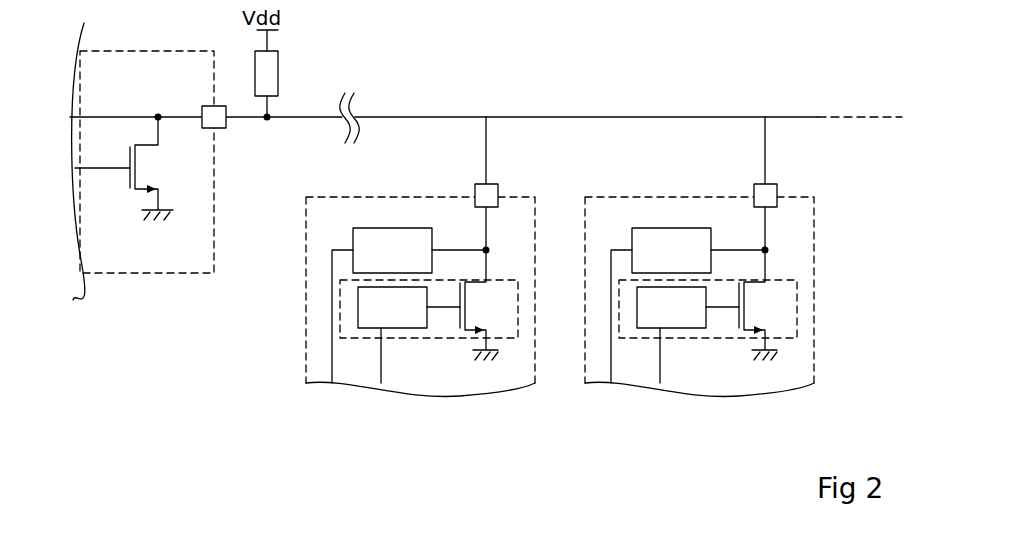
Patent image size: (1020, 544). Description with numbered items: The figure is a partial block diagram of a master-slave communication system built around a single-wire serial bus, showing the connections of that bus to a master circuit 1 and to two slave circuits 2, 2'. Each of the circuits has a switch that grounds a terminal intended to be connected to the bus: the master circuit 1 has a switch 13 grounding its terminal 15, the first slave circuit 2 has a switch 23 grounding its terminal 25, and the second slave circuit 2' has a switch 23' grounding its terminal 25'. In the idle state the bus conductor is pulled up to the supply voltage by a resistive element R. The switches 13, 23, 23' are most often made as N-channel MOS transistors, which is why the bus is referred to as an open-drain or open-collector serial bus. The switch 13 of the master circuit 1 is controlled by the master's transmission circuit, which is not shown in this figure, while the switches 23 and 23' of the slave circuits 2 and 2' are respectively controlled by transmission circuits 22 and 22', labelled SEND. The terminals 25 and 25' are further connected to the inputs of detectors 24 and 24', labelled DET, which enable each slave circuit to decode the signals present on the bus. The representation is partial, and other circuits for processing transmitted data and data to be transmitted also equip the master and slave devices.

The master circuit 1 is at (164, 167).
The switch 13 is at (147, 166).
The terminal 15 is at (202, 107).
The resistive element R is at (278, 76).
The slave circuit 2 is at (411, 296).
The transmission circuit 22 is at (429, 335).
The switch 23 is at (516, 305).
The detector 24 is at (404, 236).
The terminal 25 is at (507, 183).
The slave circuit 2' is at (728, 296).
The transmission circuit 22' is at (708, 335).
The switch 23' is at (799, 305).
The detector 24' is at (687, 236).
The terminal 25' is at (789, 183).